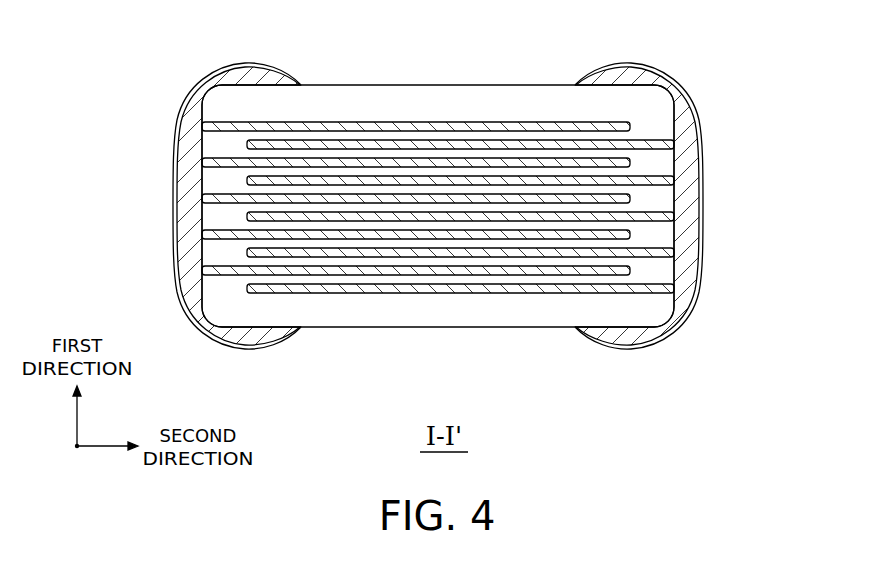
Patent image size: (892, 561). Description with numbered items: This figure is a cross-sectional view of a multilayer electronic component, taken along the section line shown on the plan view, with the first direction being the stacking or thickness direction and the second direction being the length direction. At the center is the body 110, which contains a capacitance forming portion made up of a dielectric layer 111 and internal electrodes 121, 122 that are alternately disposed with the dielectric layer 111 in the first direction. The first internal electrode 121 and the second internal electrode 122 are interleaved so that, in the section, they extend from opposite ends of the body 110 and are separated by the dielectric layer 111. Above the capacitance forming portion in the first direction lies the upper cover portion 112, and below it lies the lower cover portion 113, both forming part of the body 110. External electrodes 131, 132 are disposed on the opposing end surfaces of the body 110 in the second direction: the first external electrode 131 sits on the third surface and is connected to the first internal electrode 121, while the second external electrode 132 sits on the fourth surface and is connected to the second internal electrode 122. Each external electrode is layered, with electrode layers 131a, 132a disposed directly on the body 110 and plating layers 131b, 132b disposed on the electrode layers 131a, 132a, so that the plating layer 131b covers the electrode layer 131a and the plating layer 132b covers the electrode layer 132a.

The body 110 is at (371, 85).
The dielectric layer 111 is at (318, 152).
The upper cover portion 112 is at (434, 100).
The lower cover portion 113 is at (449, 310).
The first internal electrode 121 is at (483, 142).
The second internal electrode 122 is at (549, 143).
The first external electrode 131 is at (165, 206).
The electrode layer 131a is at (178, 176).
The plating layer 131b is at (173, 230).
The second external electrode 132 is at (713, 206).
The electrode layer 132a is at (690, 172).
The plating layer 132b is at (703, 200).